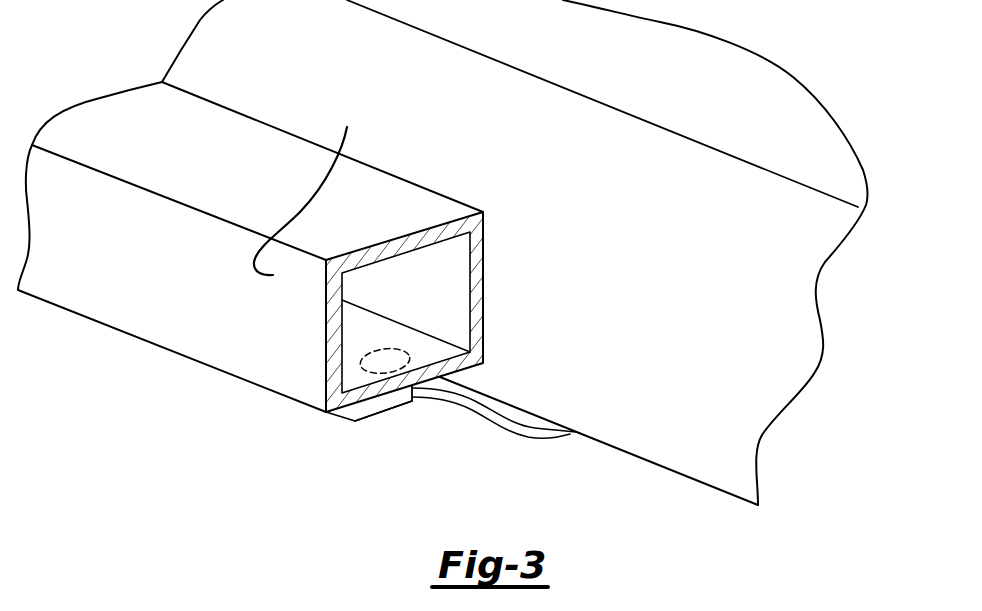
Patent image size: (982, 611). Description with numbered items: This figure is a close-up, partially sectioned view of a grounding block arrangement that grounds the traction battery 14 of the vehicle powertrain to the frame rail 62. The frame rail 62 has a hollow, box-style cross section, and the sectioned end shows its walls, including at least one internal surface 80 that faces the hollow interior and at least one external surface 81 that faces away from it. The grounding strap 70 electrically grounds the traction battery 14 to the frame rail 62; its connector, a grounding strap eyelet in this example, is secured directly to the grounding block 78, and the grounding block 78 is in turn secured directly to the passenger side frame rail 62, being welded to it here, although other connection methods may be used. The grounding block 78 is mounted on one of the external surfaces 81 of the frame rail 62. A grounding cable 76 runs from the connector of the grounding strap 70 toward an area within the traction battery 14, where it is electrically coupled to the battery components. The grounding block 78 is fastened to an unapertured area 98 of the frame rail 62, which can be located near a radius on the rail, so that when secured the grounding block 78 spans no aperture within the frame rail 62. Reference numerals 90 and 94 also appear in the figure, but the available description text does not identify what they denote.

The traction battery 14 is at (697, 443).
The frame rail 62 is at (145, 312).
The grounding strap 70 is at (513, 428).
The grounding cable 76 is at (540, 437).
The grounding block 78 is at (393, 400).
The internal surface 80 is at (343, 345).
The external surface 81 is at (285, 153).
The end wall 90 is at (302, 367).
The inner wall 94 is at (464, 259).
The unapertured area 98 is at (384, 368).